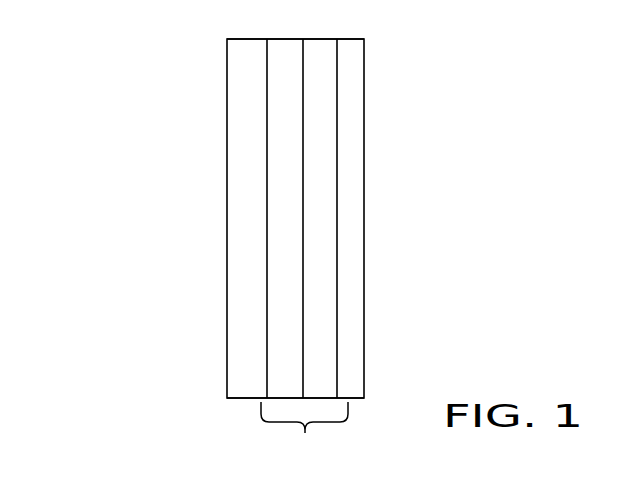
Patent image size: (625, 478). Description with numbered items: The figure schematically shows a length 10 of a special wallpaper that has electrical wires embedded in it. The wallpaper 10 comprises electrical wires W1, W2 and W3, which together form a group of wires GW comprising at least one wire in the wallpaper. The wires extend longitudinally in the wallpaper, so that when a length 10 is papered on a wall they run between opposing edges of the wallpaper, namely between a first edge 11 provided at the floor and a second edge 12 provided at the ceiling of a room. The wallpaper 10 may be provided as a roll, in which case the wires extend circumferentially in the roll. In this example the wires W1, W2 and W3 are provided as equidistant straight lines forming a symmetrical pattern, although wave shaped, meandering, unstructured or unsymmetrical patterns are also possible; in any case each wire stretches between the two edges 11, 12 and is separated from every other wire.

The length of wallpaper 10 is at (227, 185).
The first edge 11 is at (256, 401).
The second edge 12 is at (308, 39).
The electrical wire W1 is at (267, 174).
The electrical wire W2 is at (303, 227).
The electrical wire W3 is at (337, 293).
The group of wires GW is at (304, 440).